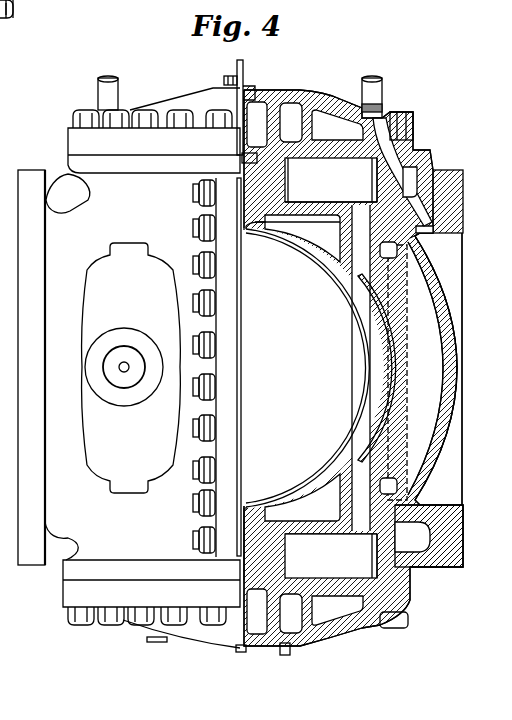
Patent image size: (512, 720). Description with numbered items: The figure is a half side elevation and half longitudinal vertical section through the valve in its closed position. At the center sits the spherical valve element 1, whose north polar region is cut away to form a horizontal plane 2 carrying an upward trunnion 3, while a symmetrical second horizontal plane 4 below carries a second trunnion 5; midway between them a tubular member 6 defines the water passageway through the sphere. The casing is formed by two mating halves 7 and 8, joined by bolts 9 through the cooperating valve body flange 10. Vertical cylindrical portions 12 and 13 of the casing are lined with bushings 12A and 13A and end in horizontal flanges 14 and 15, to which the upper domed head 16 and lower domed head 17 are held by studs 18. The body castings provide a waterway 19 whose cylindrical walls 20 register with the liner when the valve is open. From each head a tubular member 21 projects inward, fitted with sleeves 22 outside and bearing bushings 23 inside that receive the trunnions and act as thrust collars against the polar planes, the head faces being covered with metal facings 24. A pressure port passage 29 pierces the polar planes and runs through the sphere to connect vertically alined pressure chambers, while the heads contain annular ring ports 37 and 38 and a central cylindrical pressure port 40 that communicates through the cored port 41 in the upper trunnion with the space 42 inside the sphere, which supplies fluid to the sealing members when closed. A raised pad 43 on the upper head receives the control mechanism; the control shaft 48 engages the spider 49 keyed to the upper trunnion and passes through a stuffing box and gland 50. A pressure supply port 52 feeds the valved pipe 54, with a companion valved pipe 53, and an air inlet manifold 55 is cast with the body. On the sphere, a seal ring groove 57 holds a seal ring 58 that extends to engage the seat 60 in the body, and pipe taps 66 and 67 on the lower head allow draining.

The spherical valve element 1 is at (440, 286).
The horizontal plane 2 is at (294, 206).
The trunnion 3 is at (294, 180).
The second horizontal plane 4 is at (312, 530).
The second trunnion 5 is at (250, 548).
The tubular member 6 is at (380, 364).
The valve body half 7 is at (82, 202).
The valve body half 8 is at (413, 168).
The bolts 9 is at (192, 344).
The valve body flange 10 is at (222, 246).
The cylindrical portion 12 is at (372, 173).
The cylindrical bushing 12A is at (377, 191).
The cylindrical portion 13 is at (372, 548).
The cylindrical bushing 13A is at (377, 570).
The horizontal flange 14 is at (68, 162).
The horizontal flange 15 is at (63, 578).
The upper domed head 16 is at (167, 100).
The lower domed head 17 is at (195, 646).
The studs 18 is at (86, 108).
The waterway 19 is at (446, 468).
The cylindrical walls 20 is at (428, 505).
The tubular member 21 is at (260, 230).
The non-corrodible metal sleeves 22 is at (280, 222).
The bearing bushings 23 is at (258, 226).
The non-corrodible metal facings 24 is at (327, 164).
The pressure port passage 29 is at (352, 280).
The annular ring port 37 is at (291, 368).
The annular ring port 38 is at (337, 367).
The cylindrical pressure port 40 is at (256, 368).
The cored port 41 is at (244, 188).
The space 42 is at (338, 224).
The raised pad 43 is at (272, 92).
The control shaft 48 is at (237, 66).
The spider 49 is at (242, 160).
The stuffing box and gland 50 is at (224, 79).
The pressure supply port 52 is at (416, 182).
The valved pipe 53 is at (108, 78).
The valved pipe 54 is at (372, 78).
The air inlet manifold 55 is at (100, 338).
The seal ring groove 57 is at (392, 260).
The seal ring 58 is at (422, 247).
The seat 60 is at (430, 233).
The pipe tap 66 is at (240, 652).
The pipe tap 67 is at (285, 655).